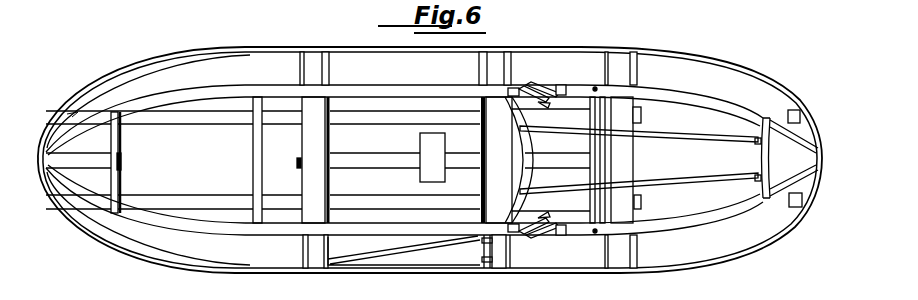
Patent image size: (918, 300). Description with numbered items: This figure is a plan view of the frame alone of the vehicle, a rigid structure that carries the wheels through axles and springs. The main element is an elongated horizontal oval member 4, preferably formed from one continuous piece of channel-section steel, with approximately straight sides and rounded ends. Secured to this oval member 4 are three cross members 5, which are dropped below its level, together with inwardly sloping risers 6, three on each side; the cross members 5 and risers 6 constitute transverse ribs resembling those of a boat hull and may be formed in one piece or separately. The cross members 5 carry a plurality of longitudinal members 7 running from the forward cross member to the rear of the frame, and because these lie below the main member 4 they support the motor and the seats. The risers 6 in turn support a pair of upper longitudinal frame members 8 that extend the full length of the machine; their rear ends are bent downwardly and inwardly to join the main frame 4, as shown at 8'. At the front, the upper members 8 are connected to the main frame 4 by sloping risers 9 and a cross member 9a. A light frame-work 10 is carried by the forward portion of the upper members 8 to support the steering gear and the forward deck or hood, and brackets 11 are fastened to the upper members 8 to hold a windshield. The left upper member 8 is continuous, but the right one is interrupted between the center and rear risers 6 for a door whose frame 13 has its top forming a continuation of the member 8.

The oval member 4 is at (244, 50).
The cross members 5 is at (308, 139).
The risers 6 is at (312, 62).
The longitudinal members 7 is at (372, 118).
The upper longitudinal frame members 8 is at (404, 162).
The bent rear ends of upper frame members 8' is at (147, 160).
The sloping risers 9 is at (795, 140).
The cross member 9a is at (756, 161).
The light frame-work 10 is at (592, 173).
The brackets 11 is at (539, 86).
The door frame 13 is at (374, 232).